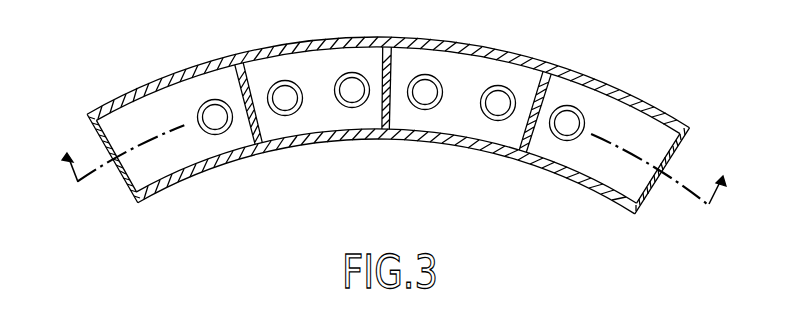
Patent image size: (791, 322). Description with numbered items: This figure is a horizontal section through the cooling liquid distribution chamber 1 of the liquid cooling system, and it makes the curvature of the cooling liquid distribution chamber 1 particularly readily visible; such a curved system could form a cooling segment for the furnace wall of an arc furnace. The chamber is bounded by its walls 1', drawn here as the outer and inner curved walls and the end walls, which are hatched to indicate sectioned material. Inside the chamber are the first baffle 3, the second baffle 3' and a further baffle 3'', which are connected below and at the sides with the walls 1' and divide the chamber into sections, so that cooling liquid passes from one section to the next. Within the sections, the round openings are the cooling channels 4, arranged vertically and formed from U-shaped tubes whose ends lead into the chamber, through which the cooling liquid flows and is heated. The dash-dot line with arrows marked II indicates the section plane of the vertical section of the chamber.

The cooling liquid distribution chamber 1 is at (388, 112).
The side wall 1' is at (387, 112).
The first baffle 3 is at (263, 132).
The second baffle 3' is at (378, 124).
The partition wall 3'' is at (521, 137).
The cooling channel 4 is at (282, 93).
The section line II- II is at (393, 165).